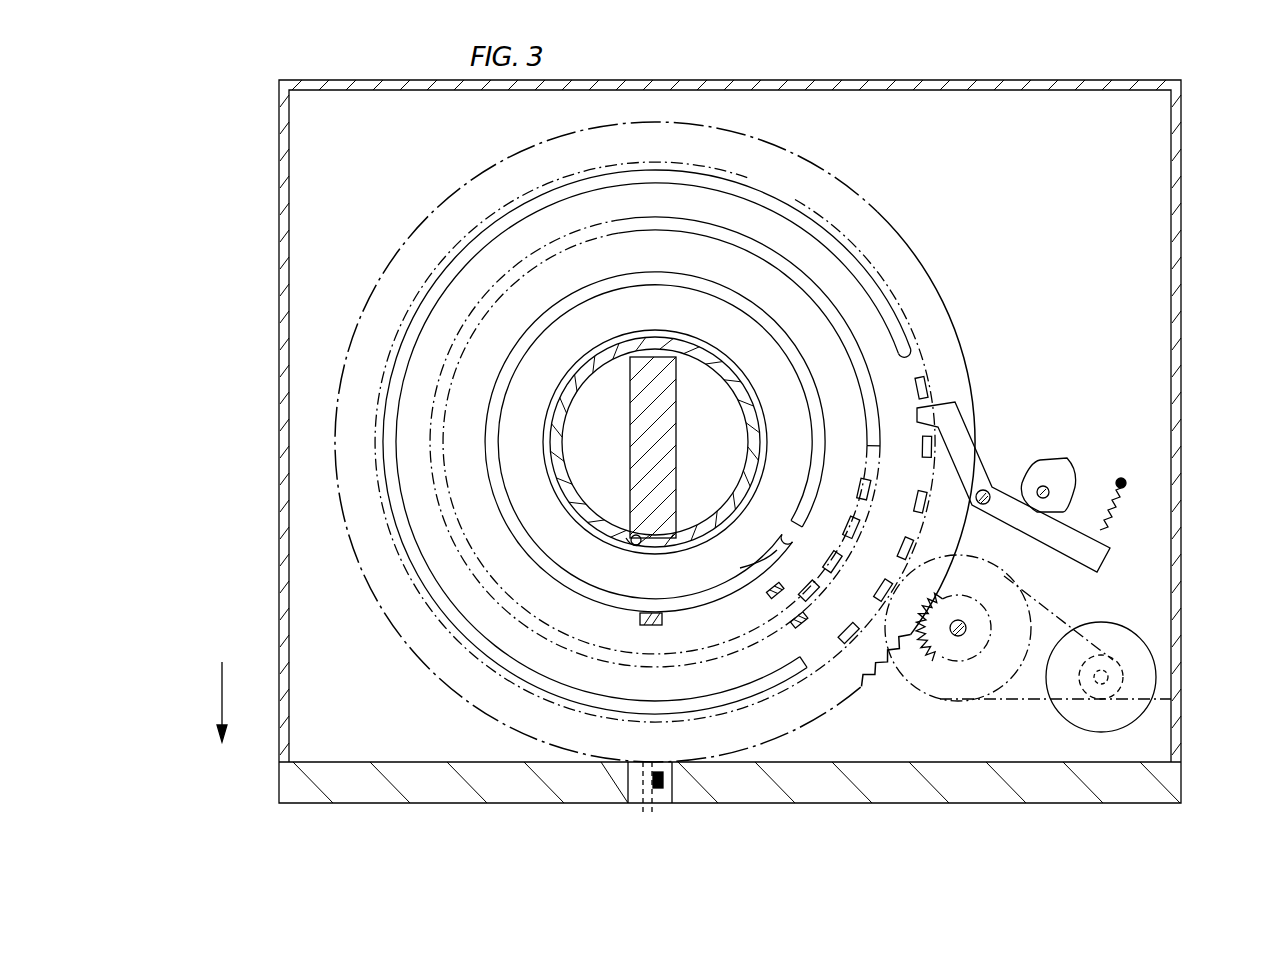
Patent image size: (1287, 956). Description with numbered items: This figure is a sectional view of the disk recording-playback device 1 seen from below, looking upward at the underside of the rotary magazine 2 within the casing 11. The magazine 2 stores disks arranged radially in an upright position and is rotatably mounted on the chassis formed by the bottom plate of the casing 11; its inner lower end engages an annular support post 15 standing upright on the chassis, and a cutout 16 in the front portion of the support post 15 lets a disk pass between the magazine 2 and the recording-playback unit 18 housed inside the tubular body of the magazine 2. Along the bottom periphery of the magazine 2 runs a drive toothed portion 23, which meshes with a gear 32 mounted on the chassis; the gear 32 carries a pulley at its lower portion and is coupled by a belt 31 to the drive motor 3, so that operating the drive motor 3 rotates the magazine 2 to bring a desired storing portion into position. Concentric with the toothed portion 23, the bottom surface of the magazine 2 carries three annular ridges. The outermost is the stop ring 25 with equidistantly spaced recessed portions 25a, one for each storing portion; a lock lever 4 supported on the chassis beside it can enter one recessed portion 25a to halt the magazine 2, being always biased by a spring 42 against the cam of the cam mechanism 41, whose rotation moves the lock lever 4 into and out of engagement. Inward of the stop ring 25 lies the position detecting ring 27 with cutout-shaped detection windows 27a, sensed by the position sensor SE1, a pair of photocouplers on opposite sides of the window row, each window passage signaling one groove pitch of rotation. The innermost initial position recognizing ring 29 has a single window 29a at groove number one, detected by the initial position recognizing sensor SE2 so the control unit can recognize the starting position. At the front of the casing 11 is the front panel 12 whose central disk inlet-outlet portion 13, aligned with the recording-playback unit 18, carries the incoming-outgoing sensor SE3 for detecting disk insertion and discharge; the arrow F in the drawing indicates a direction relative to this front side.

The disk recording-playback device 1 is at (1188, 150).
The casing 11 is at (1182, 225).
The front panel 12 is at (560, 805).
The disk inlet-outlet portion 13 is at (650, 805).
The incoming-outgoing sensor SE3 is at (662, 784).
The force direction F is at (208, 702).
The rotary magazine 2 is at (914, 239).
The stop ring 25 is at (895, 298).
The recessed portions 25a is at (925, 362).
The position detecting ring 27 is at (815, 283).
The detection windows 27a is at (820, 580).
The initial position recognizing ring 29 is at (700, 282).
The window 29a is at (780, 540).
The annular support post 15 is at (757, 412).
The recording-playback unit 18 is at (664, 452).
The cutout 16 is at (628, 548).
The initial position recognizing sensor SE2 is at (640, 619).
The position sensor SE1 is at (792, 622).
The lock lever 4 is at (967, 453).
The cam mechanism 41 is at (1060, 468).
The spring 42 is at (1117, 510).
The drive toothed portion 23 is at (878, 680).
The gear 32 is at (1155, 683).
The belt 31 is at (1060, 607).
The drive motor 3 is at (1090, 717).